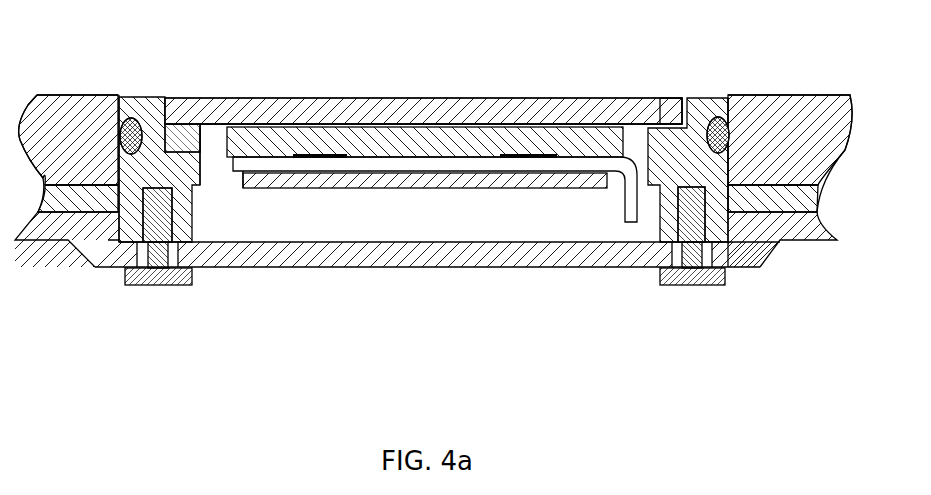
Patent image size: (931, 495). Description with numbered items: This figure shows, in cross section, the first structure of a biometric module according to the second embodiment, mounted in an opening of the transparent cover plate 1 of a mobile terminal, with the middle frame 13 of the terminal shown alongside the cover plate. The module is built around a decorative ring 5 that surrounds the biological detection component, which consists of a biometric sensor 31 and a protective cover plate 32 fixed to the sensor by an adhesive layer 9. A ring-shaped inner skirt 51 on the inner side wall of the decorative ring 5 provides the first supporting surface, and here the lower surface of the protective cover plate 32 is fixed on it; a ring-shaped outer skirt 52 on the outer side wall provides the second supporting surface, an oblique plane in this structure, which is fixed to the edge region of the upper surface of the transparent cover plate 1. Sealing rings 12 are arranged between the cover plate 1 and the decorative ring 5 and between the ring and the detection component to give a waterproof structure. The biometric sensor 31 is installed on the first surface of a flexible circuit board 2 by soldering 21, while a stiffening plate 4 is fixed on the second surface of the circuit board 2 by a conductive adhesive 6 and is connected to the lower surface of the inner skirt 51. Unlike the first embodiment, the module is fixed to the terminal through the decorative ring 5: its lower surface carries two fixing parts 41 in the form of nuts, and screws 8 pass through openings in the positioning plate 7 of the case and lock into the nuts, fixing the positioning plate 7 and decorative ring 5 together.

The transparent cover plate 1 is at (73, 98).
The middle frame 13 is at (62, 202).
The positioning plate 7 is at (588, 247).
The decorative ring 5 is at (140, 100).
The inner skirt 51 is at (190, 150).
The outer skirt 52 is at (128, 115).
The fixing part 41 is at (700, 202).
The screw 8 is at (692, 276).
The adhesive layer 9 is at (342, 123).
The protective cover plate 32 is at (252, 120).
The sealing ring 12 is at (660, 100).
The biometric sensor 31 is at (443, 130).
The soldering 21 is at (335, 160).
The stiffening plate 4 is at (490, 188).
The conductive adhesive 6 is at (378, 180).
The flexible circuit board 2 is at (240, 187).